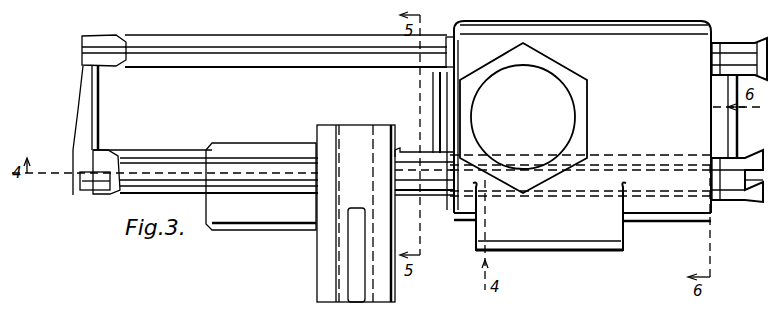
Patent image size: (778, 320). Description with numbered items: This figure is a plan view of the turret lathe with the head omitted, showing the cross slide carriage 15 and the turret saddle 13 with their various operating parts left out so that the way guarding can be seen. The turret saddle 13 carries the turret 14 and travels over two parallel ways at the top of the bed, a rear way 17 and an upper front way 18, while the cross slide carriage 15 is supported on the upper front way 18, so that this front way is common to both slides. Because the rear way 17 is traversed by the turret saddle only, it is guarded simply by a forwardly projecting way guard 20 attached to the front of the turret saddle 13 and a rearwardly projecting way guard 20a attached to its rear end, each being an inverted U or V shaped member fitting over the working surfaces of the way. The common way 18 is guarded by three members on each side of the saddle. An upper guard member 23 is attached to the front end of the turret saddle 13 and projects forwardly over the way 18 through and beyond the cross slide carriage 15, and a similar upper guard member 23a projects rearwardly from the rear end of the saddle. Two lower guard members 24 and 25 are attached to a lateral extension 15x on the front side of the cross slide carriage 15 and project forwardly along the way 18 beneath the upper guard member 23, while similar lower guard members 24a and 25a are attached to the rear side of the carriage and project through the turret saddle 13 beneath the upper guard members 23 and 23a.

The turret saddle 13 is at (575, 241).
The turret 14 is at (582, 126).
The cross slide carriage 15 is at (392, 286).
The lateral extension 15x is at (260, 232).
The rear way 17 is at (98, 44).
The upper front way 18 is at (78, 190).
The forwardly projecting way guard 20 is at (240, 42).
The rearwardly projecting way guard 20a is at (740, 55).
The upper guard member 23 is at (436, 190).
The rear upper guard member 23a is at (728, 192).
The lower guard member 24 is at (90, 195).
The rear lower guard member 24a is at (752, 202).
The lower guard member 25 is at (104, 152).
The rear lower guard member 25a is at (755, 160).